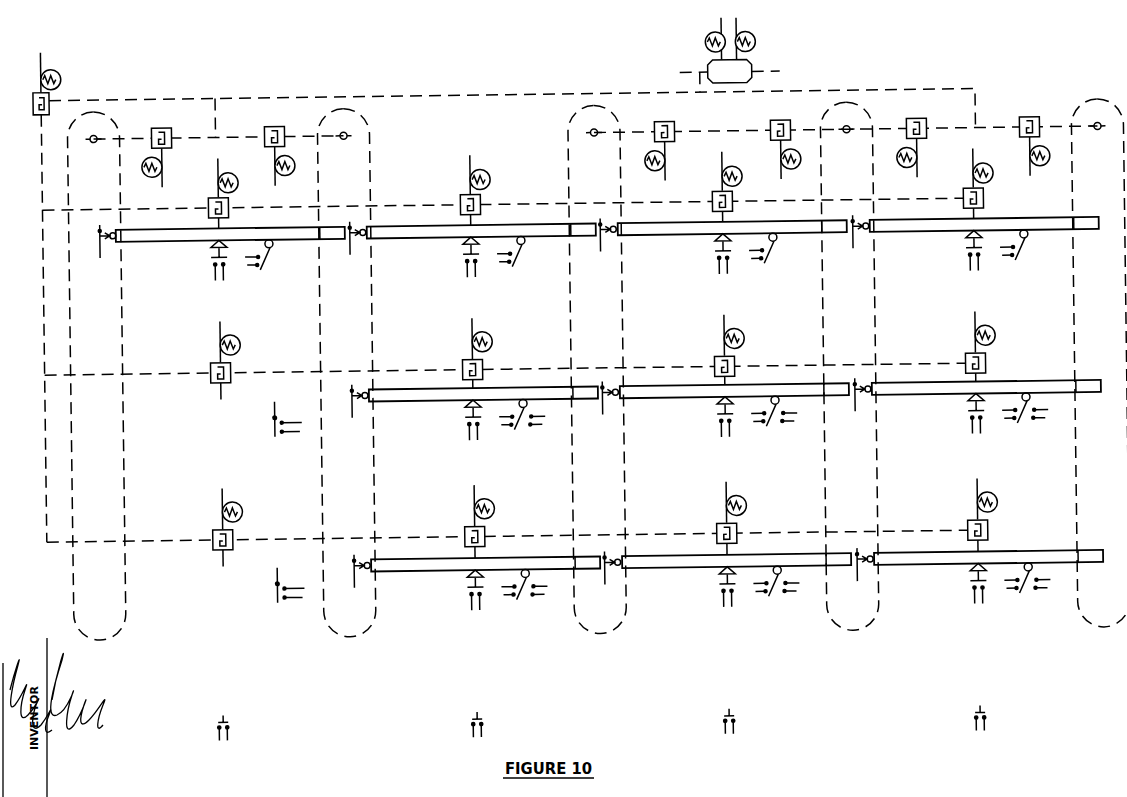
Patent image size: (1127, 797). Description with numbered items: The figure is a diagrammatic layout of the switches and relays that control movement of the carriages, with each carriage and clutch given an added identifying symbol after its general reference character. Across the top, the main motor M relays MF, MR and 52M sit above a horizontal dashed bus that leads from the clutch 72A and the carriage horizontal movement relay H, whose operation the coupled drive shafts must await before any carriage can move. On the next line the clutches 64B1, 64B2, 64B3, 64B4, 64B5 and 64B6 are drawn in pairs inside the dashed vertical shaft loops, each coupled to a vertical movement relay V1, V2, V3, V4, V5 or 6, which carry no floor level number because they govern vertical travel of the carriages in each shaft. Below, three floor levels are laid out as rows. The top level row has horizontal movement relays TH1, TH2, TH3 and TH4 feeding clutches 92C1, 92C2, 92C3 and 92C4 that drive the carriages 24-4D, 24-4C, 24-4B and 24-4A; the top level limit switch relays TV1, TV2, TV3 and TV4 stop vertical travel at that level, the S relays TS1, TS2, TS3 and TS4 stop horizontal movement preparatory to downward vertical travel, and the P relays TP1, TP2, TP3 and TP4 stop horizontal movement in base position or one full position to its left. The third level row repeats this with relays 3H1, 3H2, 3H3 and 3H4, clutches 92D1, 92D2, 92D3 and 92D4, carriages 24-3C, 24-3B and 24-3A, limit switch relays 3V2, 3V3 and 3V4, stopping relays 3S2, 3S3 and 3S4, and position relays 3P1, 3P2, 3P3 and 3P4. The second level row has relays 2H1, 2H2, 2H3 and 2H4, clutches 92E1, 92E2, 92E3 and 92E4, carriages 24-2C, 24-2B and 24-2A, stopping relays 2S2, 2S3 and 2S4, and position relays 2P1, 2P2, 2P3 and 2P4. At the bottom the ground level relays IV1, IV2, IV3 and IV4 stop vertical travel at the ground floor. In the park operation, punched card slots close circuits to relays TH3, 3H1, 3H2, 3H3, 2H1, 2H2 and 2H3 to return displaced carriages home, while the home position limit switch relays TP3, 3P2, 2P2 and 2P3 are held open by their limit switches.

The clutch 72A is at (26, 104).
The carriage horizontal movement relay H is at (56, 72).
The main motor relay MF is at (702, 39).
The main motor relay MR is at (756, 38).
The main motor relay 52M is at (730, 71).
The clutch 64B1 is at (161, 153).
The clutch 64B2 is at (274, 151).
The clutch 64B3 is at (664, 146).
The clutch 64B4 is at (780, 145).
The clutch 64B5 is at (916, 143).
The clutch 64B6 is at (1029, 142).
The vertical movement relay V1 is at (166, 168).
The vertical movement relay V2 is at (273, 166).
The vertical movement relay V3 is at (669, 161).
The vertical movement relay V4 is at (779, 160).
The vertical movement relay V5 is at (921, 158).
The vertical movement relay 6 is at (1033, 157).
The top level horizontal movement relay TH1 is at (242, 178).
The top level horizontal movement relay TH2 is at (494, 175).
The top level horizontal movement relay TH3 is at (746, 171).
The top level horizontal movement relay TH4 is at (997, 168).
The clutch 92C1 is at (239, 212).
The clutch 92C2 is at (491, 209).
The clutch 92C3 is at (743, 206).
The clutch 92C4 is at (994, 202).
The top level limit switch relay TV1 is at (108, 241).
The top level limit switch relay TV2 is at (358, 237).
The top level limit switch relay TV3 is at (609, 234).
The top level limit switch relay TV4 is at (861, 231).
The carriage 24-4D is at (230, 243).
The carriage 24-4C is at (481, 240).
The carriage 24-4B is at (732, 236).
The carriage 24-4A is at (984, 233).
The top level stopping relay TS1 is at (201, 262).
The top level stopping relay TS2 is at (453, 259).
The top level stopping relay TS3 is at (705, 256).
The top level stopping relay TS4 is at (956, 252).
The top level position relay TP1 is at (259, 262).
The top level position relay TP2 is at (511, 258).
The top level home position limit switch relay TP3 is at (763, 255).
The top level position relay TP4 is at (1014, 252).
The third level horizontal movement relay 3H1 is at (244, 342).
The third level horizontal movement relay 3H2 is at (496, 339).
The third level horizontal movement relay 3H3 is at (748, 335).
The third level horizontal movement relay 3H4 is at (999, 332).
The clutch 92D1 is at (241, 380).
The clutch 92D2 is at (493, 373).
The clutch 92D3 is at (745, 370).
The clutch 92D4 is at (996, 366).
The third level position relay 3P1 is at (280, 425).
The third level limit switch relay 3V2 is at (360, 400).
The third level limit switch relay 3V3 is at (611, 397).
The third level limit switch relay 3V4 is at (863, 394).
The carriage 24-3C is at (483, 403).
The carriage 24-3B is at (734, 399).
The carriage 24-3A is at (986, 396).
The third level stopping relay 3S2 is at (455, 422).
The third level stopping relay 3S3 is at (707, 419).
The third level stopping relay 3S4 is at (958, 415).
The third level home position limit switch relay 3P2 is at (522, 421).
The third level position relay 3P3 is at (774, 418).
The third level position relay 3P4 is at (1025, 415).
The second level horizontal movement relay 2H1 is at (246, 509).
The second level horizontal movement relay 2H2 is at (498, 506).
The second level horizontal movement relay 2H3 is at (750, 502).
The second level horizontal movement relay 2H4 is at (1001, 499).
The clutch 92E1 is at (243, 547).
The clutch 92E2 is at (495, 542).
The clutch 92E3 is at (747, 539).
The clutch 92E4 is at (998, 535).
The second level position relay 2P1 is at (282, 591).
The carriage 24-2C is at (485, 572).
The carriage 24-2B is at (736, 569).
The carriage 24-2A is at (988, 566).
The second level stopping relay 2S2 is at (457, 592).
The second level stopping relay 2S3 is at (709, 589).
The second level stopping relay 2S4 is at (960, 585).
The second level home position limit switch relay 2P2 is at (524, 591).
The second level home position limit switch relay 2P3 is at (776, 588).
The second level position relay 2P4 is at (1027, 585).
The ground level limit switch relay IV1 is at (236, 727).
The ground level limit switch relay IV2 is at (489, 724).
The ground level limit switch relay IV3 is at (741, 720).
The ground level limit switch relay IV4 is at (992, 717).